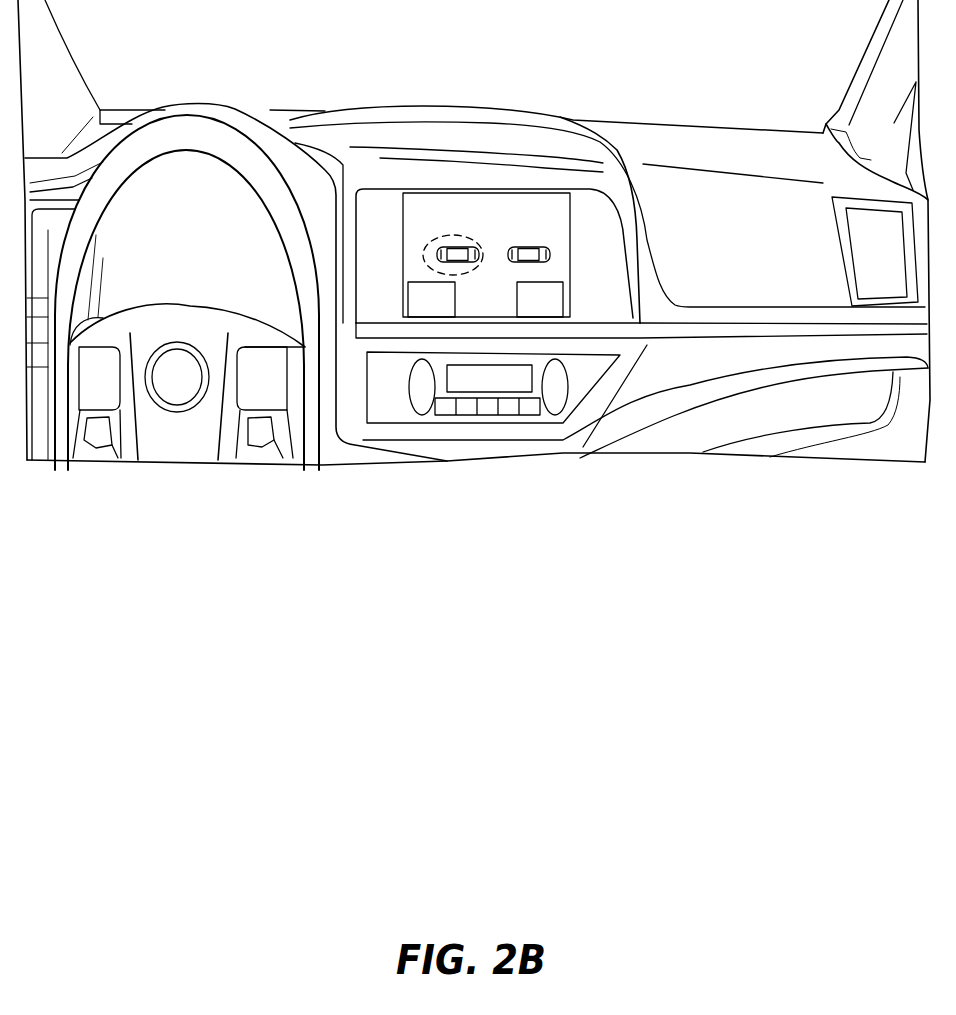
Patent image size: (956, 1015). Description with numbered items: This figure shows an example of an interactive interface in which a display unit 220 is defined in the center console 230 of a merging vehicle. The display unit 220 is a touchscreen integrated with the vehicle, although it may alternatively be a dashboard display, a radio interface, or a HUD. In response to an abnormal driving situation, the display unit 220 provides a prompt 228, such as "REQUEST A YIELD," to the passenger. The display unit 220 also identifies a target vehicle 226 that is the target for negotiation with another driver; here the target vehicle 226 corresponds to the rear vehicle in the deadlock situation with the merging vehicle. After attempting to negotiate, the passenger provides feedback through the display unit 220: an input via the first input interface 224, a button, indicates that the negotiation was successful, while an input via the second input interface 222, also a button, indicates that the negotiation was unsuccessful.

The display unit 220 is at (571, 243).
The no button 222 is at (571, 308).
The first input interface 224 is at (408, 307).
The target vehicle 226 is at (423, 255).
The prompt 228 is at (423, 192).
The center console 230 is at (767, 287).